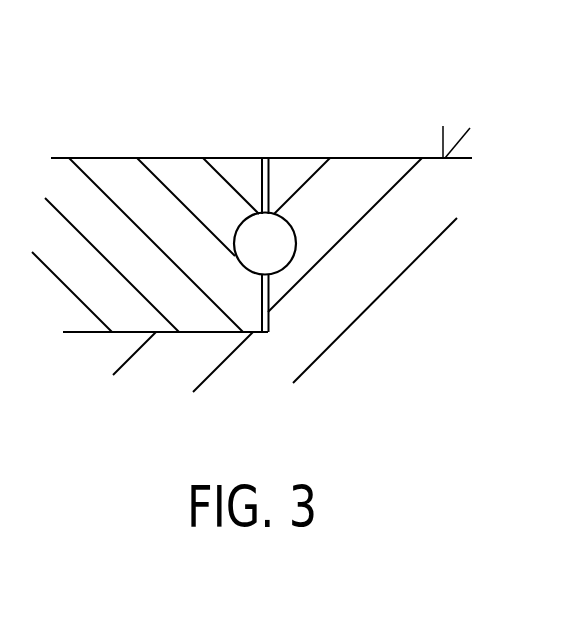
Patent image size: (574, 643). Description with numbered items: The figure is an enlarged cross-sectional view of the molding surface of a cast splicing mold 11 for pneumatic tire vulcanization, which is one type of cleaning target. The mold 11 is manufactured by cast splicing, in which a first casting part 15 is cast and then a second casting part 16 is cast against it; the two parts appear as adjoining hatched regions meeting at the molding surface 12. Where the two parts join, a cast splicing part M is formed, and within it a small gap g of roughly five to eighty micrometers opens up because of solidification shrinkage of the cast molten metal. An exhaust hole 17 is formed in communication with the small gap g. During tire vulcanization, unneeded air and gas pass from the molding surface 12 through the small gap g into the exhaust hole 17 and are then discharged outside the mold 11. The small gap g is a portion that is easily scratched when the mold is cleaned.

The mold 11 is at (445, 158).
The molding surface 12 is at (343, 158).
The first casting part 15 is at (388, 176).
The second casting part 16 is at (115, 171).
The exhaust hole 17 is at (291, 261).
The cast splicing part M is at (262, 190).
The small gap g is at (262, 158).